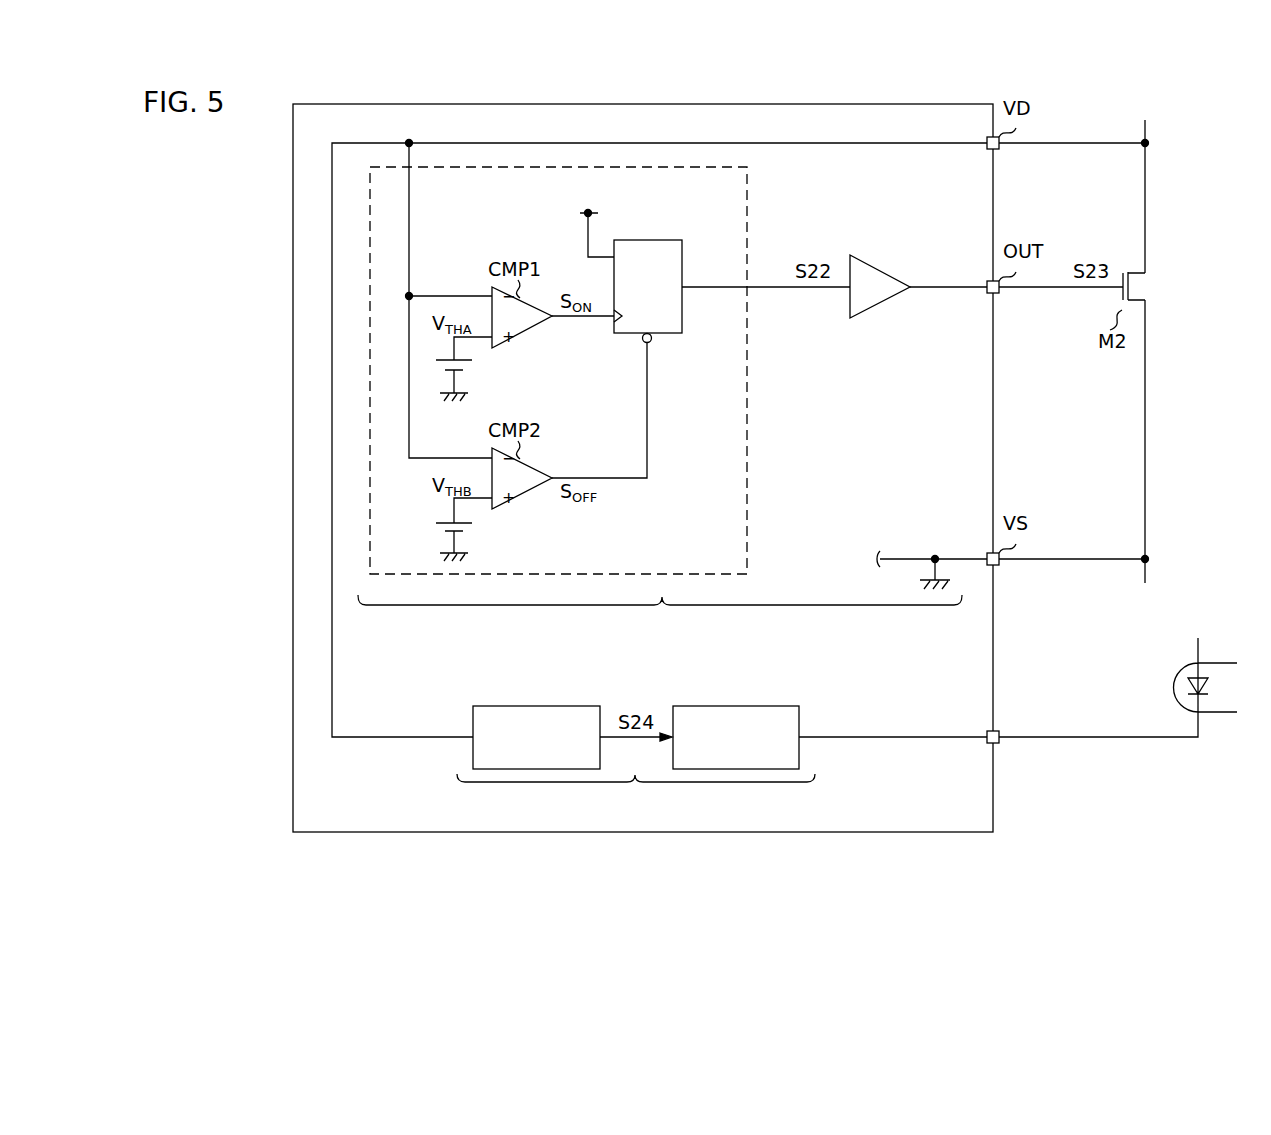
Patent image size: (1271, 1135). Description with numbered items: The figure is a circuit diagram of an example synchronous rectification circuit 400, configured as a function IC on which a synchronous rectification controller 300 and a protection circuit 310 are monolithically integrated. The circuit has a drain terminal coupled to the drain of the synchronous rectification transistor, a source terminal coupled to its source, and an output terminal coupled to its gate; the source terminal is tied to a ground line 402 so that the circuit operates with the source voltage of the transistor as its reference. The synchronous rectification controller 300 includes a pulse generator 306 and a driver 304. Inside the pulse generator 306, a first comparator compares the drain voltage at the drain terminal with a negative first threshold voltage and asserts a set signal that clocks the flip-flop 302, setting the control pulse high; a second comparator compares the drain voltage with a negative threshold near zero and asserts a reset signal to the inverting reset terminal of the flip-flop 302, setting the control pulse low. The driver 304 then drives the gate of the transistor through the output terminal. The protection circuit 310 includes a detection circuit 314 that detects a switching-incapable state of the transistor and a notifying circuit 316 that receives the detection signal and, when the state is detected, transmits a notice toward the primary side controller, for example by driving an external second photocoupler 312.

The synchronous rectification controller 300 is at (660, 618).
The flip-flop 302 is at (650, 240).
The driver 304 is at (880, 274).
The pulse generator 306 is at (750, 443).
The protection circuit 310 is at (636, 796).
The second photocoupler 312 is at (1213, 712).
The detection circuit 314 is at (532, 706).
The notifying circuit 316 is at (733, 706).
The synchronous rectification circuit 400 is at (590, 832).
The ground line 402 is at (905, 559).